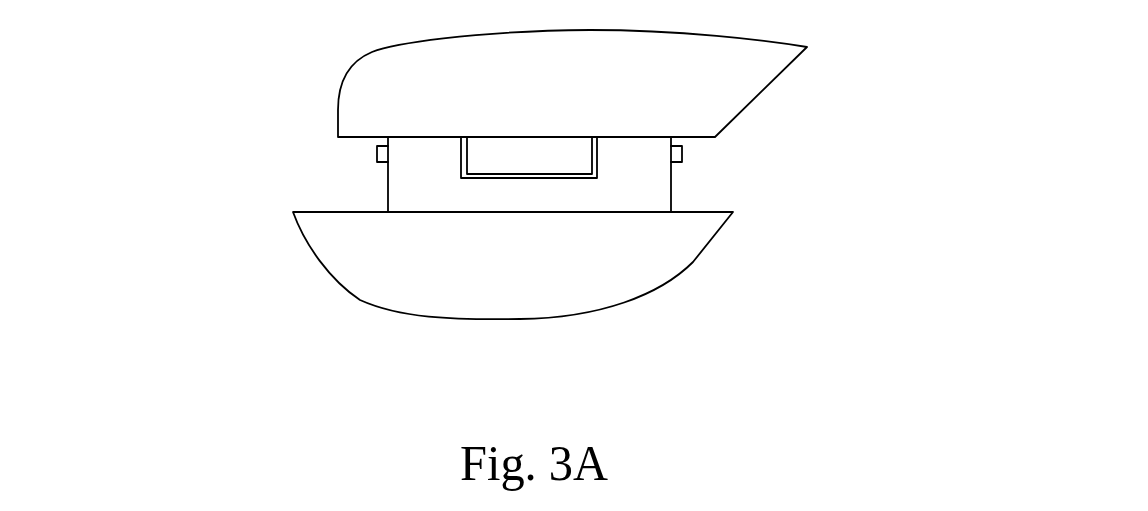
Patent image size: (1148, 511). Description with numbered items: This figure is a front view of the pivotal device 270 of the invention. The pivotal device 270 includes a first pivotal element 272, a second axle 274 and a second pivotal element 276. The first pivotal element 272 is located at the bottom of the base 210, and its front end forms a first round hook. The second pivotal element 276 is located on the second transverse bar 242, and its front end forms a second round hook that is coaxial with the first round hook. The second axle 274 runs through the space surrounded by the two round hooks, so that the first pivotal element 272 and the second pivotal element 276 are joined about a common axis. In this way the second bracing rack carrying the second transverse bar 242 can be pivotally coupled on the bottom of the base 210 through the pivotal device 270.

The base 210 is at (705, 101).
The second transverse bar 242 is at (618, 274).
The pivotal device 270 is at (165, 112).
The first pivotal element 272 is at (480, 163).
The second axle 274 is at (385, 150).
The second pivotal element 276 is at (402, 192).